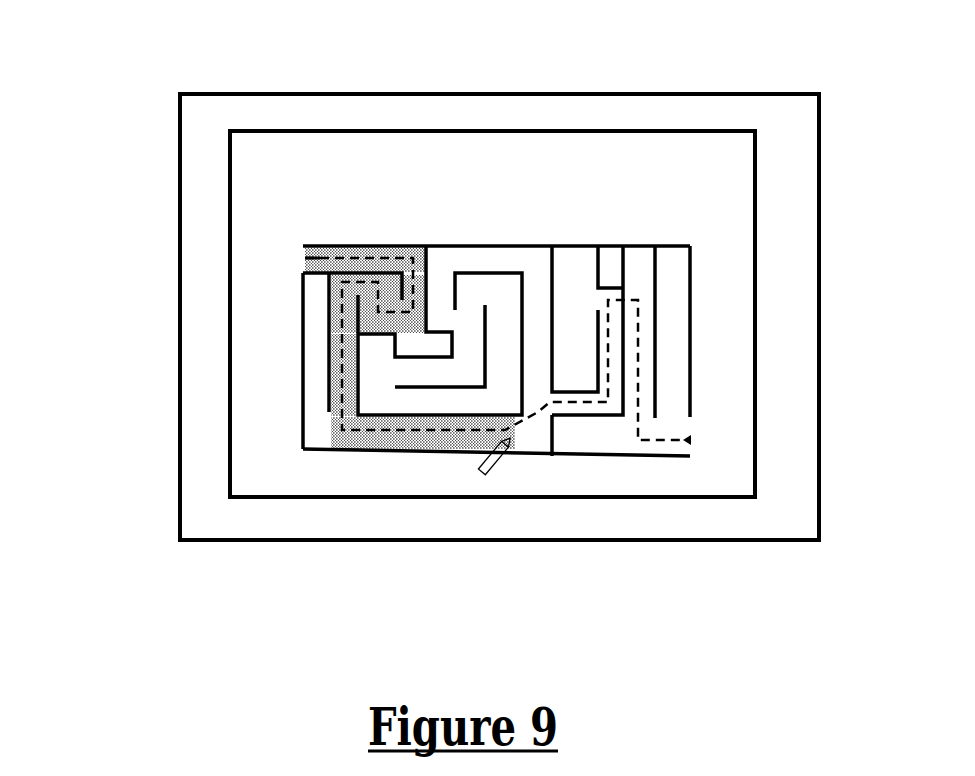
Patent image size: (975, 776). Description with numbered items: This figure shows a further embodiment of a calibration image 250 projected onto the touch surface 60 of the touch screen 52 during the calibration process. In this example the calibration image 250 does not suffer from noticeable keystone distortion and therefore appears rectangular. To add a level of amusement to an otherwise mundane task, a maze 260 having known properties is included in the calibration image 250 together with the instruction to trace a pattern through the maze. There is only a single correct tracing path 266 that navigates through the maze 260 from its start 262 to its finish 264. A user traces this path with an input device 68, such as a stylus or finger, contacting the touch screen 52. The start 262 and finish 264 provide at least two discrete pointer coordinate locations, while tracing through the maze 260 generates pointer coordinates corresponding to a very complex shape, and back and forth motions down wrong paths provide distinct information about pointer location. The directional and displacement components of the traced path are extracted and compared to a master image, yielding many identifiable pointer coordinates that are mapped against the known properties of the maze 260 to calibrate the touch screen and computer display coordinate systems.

The touch screen 52 is at (205, 83).
The touch surface 60 is at (310, 115).
The calibration image 250 is at (655, 118).
The maze 260 is at (300, 397).
The start 262 is at (296, 258).
The finish 264 is at (697, 442).
The correct tracing path 266 is at (643, 312).
The input device 68 is at (493, 463).